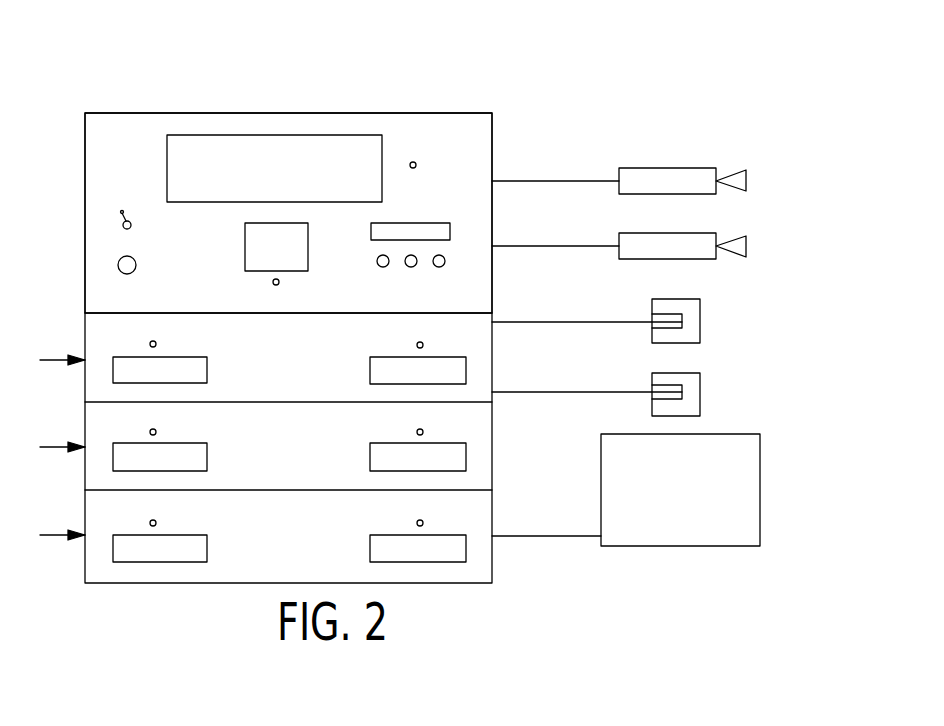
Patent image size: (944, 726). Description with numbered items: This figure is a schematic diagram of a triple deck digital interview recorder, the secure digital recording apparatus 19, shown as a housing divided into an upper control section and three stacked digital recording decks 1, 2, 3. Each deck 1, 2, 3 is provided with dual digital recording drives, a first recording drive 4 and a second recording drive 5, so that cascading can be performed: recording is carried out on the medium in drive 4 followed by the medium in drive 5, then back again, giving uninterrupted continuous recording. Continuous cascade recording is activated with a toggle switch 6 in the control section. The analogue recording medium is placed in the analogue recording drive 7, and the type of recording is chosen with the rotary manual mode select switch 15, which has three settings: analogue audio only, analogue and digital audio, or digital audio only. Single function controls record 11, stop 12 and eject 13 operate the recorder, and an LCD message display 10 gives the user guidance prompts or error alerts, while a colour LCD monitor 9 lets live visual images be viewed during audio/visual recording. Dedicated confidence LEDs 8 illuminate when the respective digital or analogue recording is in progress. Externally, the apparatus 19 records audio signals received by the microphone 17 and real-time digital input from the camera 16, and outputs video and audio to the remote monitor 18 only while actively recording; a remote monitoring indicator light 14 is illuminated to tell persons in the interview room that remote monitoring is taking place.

The first digital recording deck 1 is at (56, 360).
The second digital recording deck 2 is at (55, 447).
The third digital recording deck 3 is at (55, 535).
The first recording drive 4 is at (207, 370).
The second recording drive 5 is at (370, 368).
The toggle switch 6 is at (123, 226).
The analogue recording drive 7 is at (357, 135).
The confidence LEDs 8 is at (416, 163).
The colour LCD monitor 9 is at (245, 235).
The LCD message display 10 is at (438, 223).
The record control 11 is at (378, 266).
The stop control 12 is at (406, 266).
The eject control 13 is at (434, 266).
The remote monitoring indicator light 14 is at (273, 282).
The mode select switch 15 is at (118, 265).
The camera 16 is at (718, 170).
The microphone 17 is at (700, 393).
The remote monitor 18 is at (760, 487).
The secure digital recording apparatus 19 is at (458, 113).